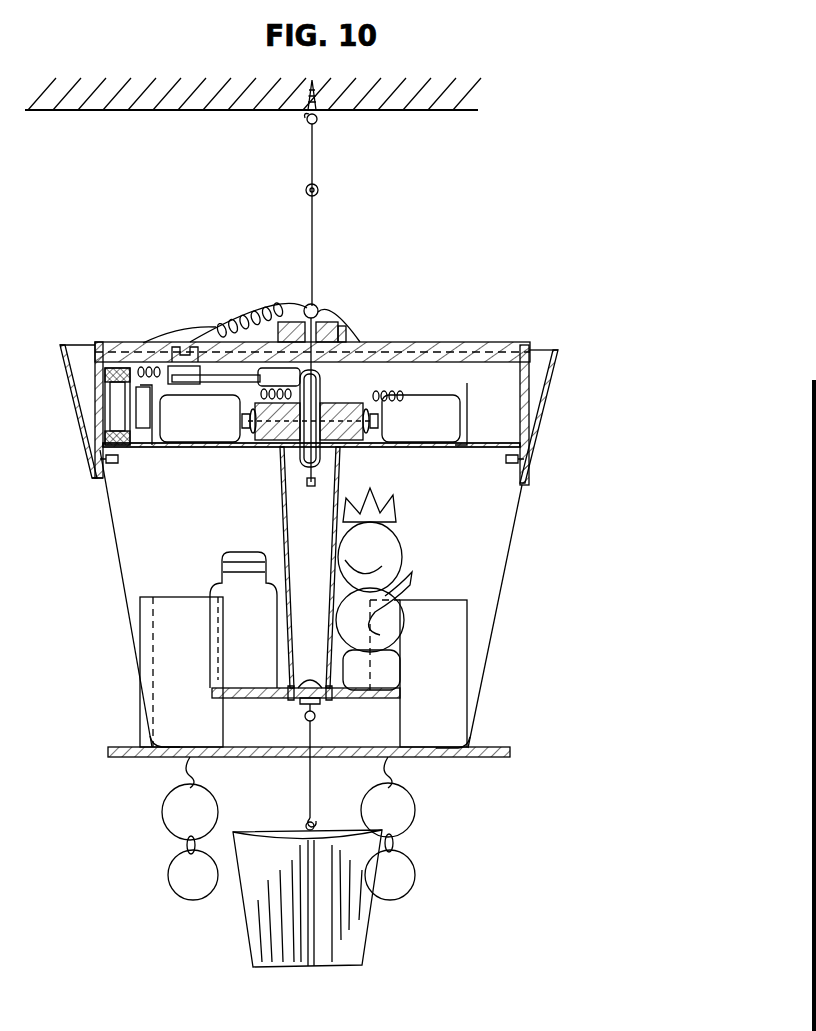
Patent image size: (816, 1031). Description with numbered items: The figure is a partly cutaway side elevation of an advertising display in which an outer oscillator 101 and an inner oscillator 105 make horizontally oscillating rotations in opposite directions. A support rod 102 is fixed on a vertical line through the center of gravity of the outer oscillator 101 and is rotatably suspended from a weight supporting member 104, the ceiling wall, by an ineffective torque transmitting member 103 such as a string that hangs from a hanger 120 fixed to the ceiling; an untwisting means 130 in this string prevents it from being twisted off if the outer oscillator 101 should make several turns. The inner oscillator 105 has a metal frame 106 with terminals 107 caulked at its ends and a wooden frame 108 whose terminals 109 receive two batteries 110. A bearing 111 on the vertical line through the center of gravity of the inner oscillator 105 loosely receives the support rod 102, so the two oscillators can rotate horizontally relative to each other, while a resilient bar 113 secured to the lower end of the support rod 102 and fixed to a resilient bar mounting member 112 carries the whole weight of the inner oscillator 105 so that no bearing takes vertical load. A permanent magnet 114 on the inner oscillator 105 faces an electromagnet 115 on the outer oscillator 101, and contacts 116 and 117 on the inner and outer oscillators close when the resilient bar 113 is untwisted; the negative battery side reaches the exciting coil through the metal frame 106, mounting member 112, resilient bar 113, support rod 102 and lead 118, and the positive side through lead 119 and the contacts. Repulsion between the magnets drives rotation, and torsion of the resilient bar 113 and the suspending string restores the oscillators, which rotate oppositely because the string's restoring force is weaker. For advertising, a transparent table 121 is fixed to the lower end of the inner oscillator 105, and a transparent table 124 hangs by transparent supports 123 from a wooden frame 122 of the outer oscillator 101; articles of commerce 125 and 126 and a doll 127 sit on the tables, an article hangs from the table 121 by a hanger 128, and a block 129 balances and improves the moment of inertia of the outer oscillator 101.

The outer oscillator 101 is at (427, 342).
The support rod 102 is at (319, 316).
The ineffective torque transmitting member 103 is at (304, 237).
The weight supporting member 104 is at (78, 110).
The inner oscillator 105 is at (207, 443).
The metal frame 106 is at (463, 440).
The terminals 107 is at (155, 445).
The wooden frame 108 is at (356, 437).
The terminals 109 is at (248, 425).
The batteries 110 is at (245, 447).
The bearing 111 is at (287, 502).
The resilient bar mounting member 112 is at (296, 687).
The resilient bar 113 is at (392, 632).
The permanent magnet 114 is at (138, 433).
The electromagnet 115 is at (110, 402).
The contact 116 is at (247, 340).
The contact 117 is at (197, 343).
The lead 118 is at (273, 309).
The lead 119 is at (143, 343).
The hanger 120 is at (304, 118).
The table 121 is at (347, 704).
The wooden frame 122 is at (76, 427).
The supports 123 is at (502, 610).
The table 124 is at (505, 757).
The article of commerce 125 is at (220, 584).
The article of commerce 126 is at (442, 600).
The doll 127 is at (402, 541).
The hanger 128 is at (188, 763).
The block 129 is at (512, 343).
The untwisting means 130 is at (318, 190).